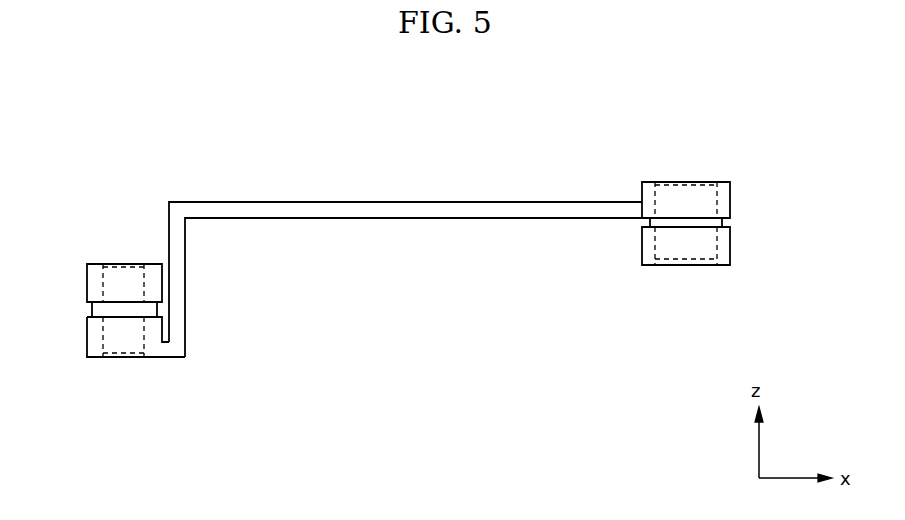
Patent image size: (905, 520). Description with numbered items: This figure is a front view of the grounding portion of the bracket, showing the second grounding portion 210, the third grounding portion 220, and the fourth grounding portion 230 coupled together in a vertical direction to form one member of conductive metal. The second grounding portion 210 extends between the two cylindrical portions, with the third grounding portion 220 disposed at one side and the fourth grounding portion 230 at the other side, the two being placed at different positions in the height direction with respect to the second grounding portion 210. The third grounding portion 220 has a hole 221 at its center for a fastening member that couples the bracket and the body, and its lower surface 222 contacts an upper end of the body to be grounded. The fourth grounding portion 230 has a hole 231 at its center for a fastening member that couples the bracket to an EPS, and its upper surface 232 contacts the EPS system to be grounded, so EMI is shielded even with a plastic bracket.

The second grounding portion 210 is at (365, 218).
The third grounding portion 220 is at (87, 337).
The hole 221 is at (103, 288).
The lower surface 222 is at (122, 358).
The fourth grounding portion 230 is at (733, 193).
The hole 231 is at (717, 248).
The upper surface 232 is at (685, 181).